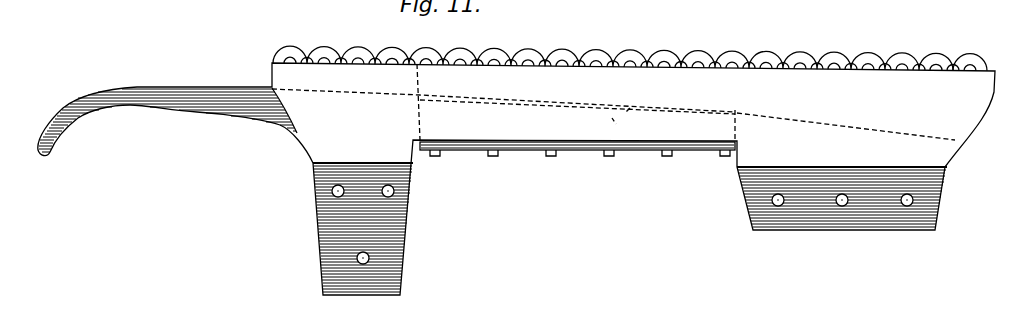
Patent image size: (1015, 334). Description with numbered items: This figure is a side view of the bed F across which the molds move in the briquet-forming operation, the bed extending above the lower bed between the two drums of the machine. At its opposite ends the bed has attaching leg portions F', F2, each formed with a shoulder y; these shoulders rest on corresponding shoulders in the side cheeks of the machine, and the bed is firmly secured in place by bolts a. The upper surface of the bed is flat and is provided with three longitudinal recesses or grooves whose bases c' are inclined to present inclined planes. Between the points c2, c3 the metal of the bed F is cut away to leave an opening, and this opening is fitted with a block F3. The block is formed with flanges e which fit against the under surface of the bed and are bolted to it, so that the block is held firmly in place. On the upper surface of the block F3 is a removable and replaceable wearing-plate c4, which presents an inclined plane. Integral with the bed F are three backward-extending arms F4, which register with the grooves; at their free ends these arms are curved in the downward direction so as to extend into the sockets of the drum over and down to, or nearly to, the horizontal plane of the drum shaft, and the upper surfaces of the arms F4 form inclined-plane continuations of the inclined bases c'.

The bed F is at (516, 170).
The attaching leg portion F' is at (382, 229).
The attaching leg portion F2 is at (810, 218).
The block F3 is at (616, 124).
The backward-extending arm F4 is at (128, 105).
The shoulder y is at (873, 167).
The flange e is at (578, 152).
The base of recess c' is at (594, 89).
The point c2 is at (737, 112).
The point c3 is at (420, 98).
The wearing-plate c4 is at (630, 108).
The bolt a is at (959, 35).